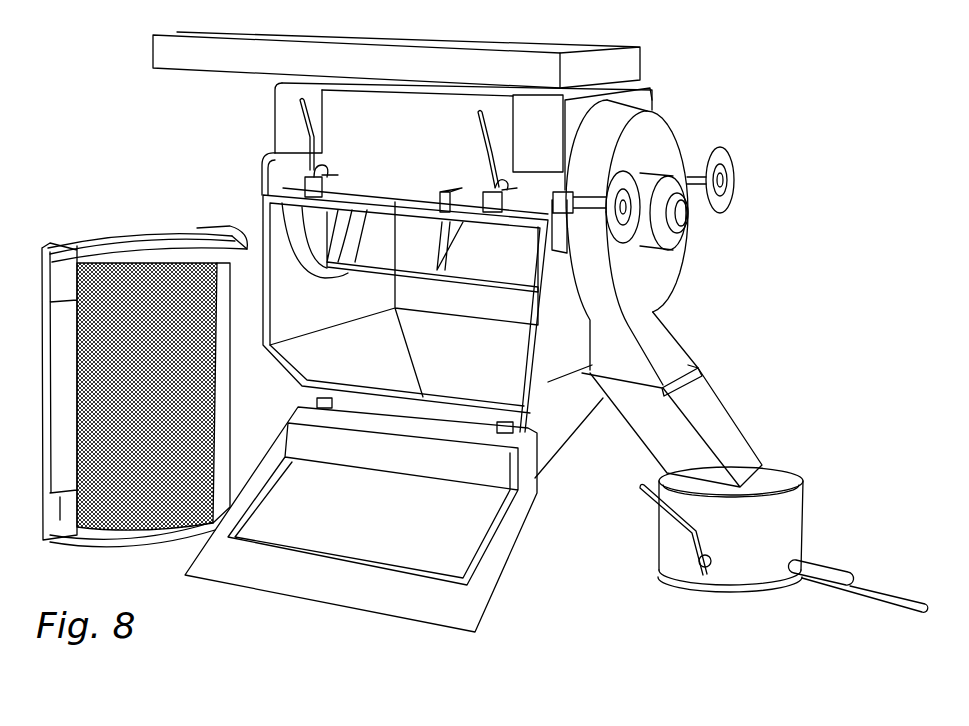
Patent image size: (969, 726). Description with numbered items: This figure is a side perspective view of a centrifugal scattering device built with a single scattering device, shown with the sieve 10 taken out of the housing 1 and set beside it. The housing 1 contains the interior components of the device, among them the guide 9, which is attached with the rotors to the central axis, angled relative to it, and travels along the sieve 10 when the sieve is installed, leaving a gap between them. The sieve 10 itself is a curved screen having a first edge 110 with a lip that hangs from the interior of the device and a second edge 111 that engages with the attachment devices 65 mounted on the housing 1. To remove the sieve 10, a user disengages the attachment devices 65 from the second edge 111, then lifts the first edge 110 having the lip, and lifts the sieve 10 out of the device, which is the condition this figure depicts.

The housing 1 is at (247, 568).
The guide 9 is at (496, 283).
The sieve 10 is at (167, 475).
The attachment devices 65 is at (620, 238).
The first edge 110 is at (67, 320).
The second edge 111 is at (207, 228).